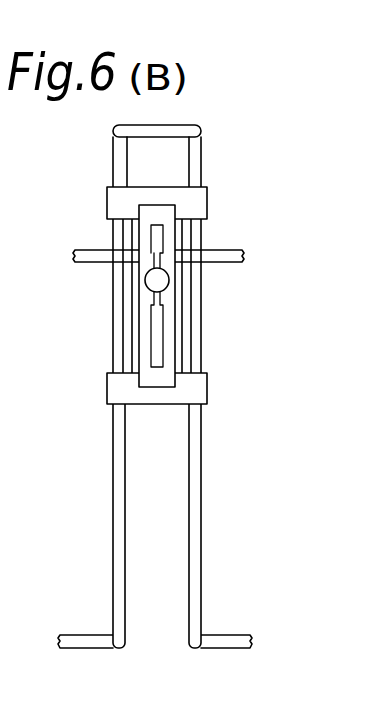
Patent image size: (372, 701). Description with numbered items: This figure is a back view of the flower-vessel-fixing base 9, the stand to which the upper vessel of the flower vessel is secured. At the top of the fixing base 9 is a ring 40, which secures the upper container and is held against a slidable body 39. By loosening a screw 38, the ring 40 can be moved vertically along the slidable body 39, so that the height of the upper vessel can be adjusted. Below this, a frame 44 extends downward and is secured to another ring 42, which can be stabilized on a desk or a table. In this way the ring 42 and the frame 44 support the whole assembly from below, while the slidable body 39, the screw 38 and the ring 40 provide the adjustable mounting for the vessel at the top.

The flower-vessel-fixing base 9 is at (210, 158).
The screw 38 is at (158, 280).
The slidable body 39 is at (175, 350).
The ring 40 is at (218, 255).
The ring 42 is at (220, 641).
The frame 44 is at (193, 493).